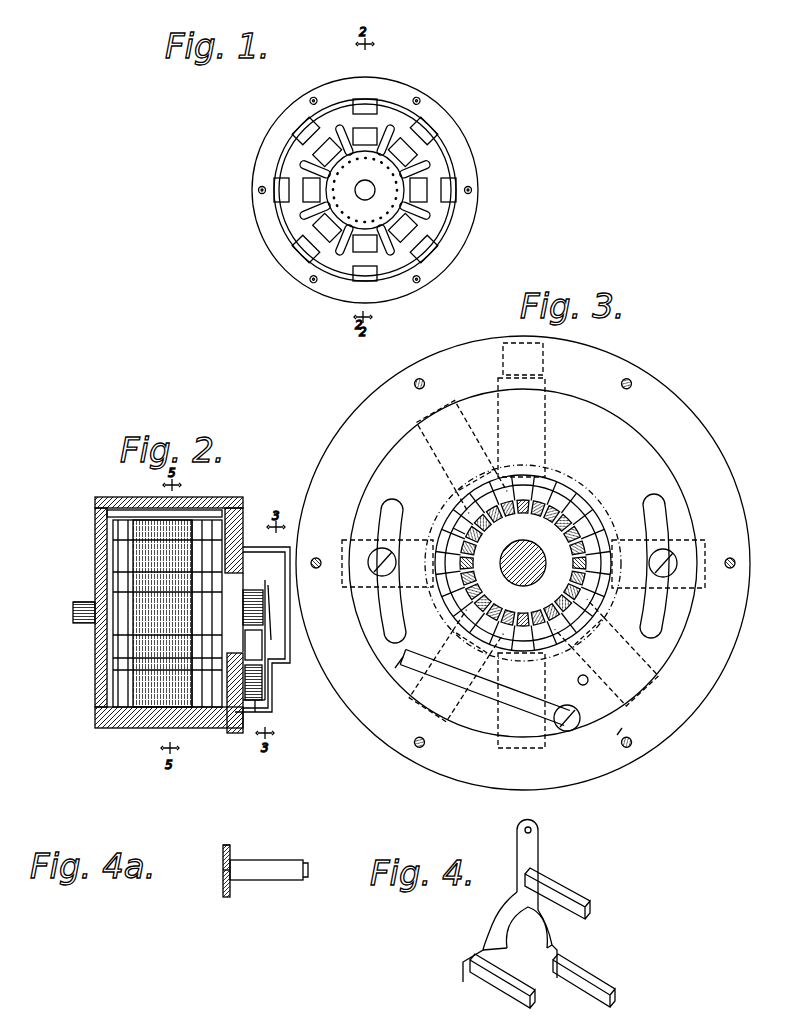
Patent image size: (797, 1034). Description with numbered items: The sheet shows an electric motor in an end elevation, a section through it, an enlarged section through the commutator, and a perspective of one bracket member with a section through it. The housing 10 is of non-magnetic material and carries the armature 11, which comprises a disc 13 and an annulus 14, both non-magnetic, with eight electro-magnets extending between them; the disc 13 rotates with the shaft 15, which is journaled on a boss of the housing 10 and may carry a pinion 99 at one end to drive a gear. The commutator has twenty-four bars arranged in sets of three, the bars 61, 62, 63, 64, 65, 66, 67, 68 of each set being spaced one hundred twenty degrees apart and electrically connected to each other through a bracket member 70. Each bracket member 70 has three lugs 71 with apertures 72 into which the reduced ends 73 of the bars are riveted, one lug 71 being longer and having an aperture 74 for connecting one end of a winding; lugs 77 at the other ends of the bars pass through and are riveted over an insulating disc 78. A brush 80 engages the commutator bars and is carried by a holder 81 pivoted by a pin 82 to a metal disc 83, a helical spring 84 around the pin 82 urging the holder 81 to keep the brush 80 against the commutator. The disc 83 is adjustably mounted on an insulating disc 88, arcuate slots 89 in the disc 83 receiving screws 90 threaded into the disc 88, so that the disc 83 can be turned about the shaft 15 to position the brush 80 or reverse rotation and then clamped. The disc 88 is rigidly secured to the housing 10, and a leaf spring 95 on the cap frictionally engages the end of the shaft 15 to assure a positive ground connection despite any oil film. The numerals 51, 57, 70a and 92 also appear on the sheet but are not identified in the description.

In FIG. 1, the housing 10 is at (458, 126).
In FIG. 3, the housing 10 is at (523, 563).
In FIG. 2, the housing 10 is at (95, 718).
In FIG. 1, the armature 11 is at (385, 165).
In FIG. 3, the armature 11 is at (555, 478).
In FIG. 2, the armature 11 is at (125, 727).
In FIG. 1, the disc 13 is at (438, 218).
In FIG. 2, the disc 13 is at (207, 725).
In FIG. 2, the annulus 14 is at (110, 535).
In FIG. 1, the shaft 15 is at (365, 190).
In FIG. 3, the shaft 15 is at (526, 578).
In FIG. 2, the shaft 15 is at (92, 620).
In FIG. 2, the end plate 51 is at (185, 512).
In FIG. 3, the pole piece 57 is at (440, 523).
In FIG. 3, the commutator bars 61 is at (506, 552).
In FIG. 2, the commutator bars 61 is at (250, 590).
In FIG. 4a, the commutator bars 61 is at (270, 860).
In FIG. 4, the commutator bars 61 is at (565, 890).
In FIG. 3, the commutator bars 62 is at (528, 480).
In FIG. 3, the commutator bars 63 is at (516, 478).
In FIG. 3, the commutator bars 64 is at (543, 548).
In FIG. 3, the commutator bars 65 is at (539, 571).
In FIG. 3, the commutator bars 66 is at (529, 582).
In FIG. 3, the commutator bars 67 is at (538, 578).
In FIG. 3, the commutator bars 68 is at (511, 567).
In FIG. 4a, the bracket member 70 is at (223, 888).
In FIG. 4, the bracket member 70 is at (562, 930).
In FIG. 2, the bracket flange 70a is at (266, 700).
In FIG. 4, the lugs 71 is at (533, 852).
In FIG. 4a, the apertures 72 is at (224, 871).
In FIG. 4a, the reduced ends 73 is at (224, 852).
In FIG. 4, the aperture 74 is at (533, 830).
In FIG. 4a, the lugs 77 is at (308, 862).
In FIG. 2, the insulating disc 78 is at (262, 645).
In FIG. 3, the brush 80 is at (422, 665).
In FIG. 2, the brush 80 is at (270, 672).
In FIG. 3, the holder 81 is at (472, 688).
In FIG. 3, the pin 82 is at (569, 731).
In FIG. 3, the disc 83 is at (622, 735).
In FIG. 2, the disc 83 is at (247, 520).
In FIG. 3, the helical spring 84 is at (585, 684).
In FIG. 2, the helical spring 84 is at (262, 712).
In FIG. 3, the disc 88 is at (472, 745).
In FIG. 2, the disc 88 is at (236, 497).
In FIG. 3, the arcuate slots 89 is at (384, 532).
In FIG. 3, the screws 90 is at (372, 566).
In FIG. 1, the hole 92 is at (421, 98).
In FIG. 3, the hole 92 is at (426, 380).
In FIG. 2, the leaf spring 95 is at (271, 590).
In FIG. 2, the pinion 99 is at (83, 592).